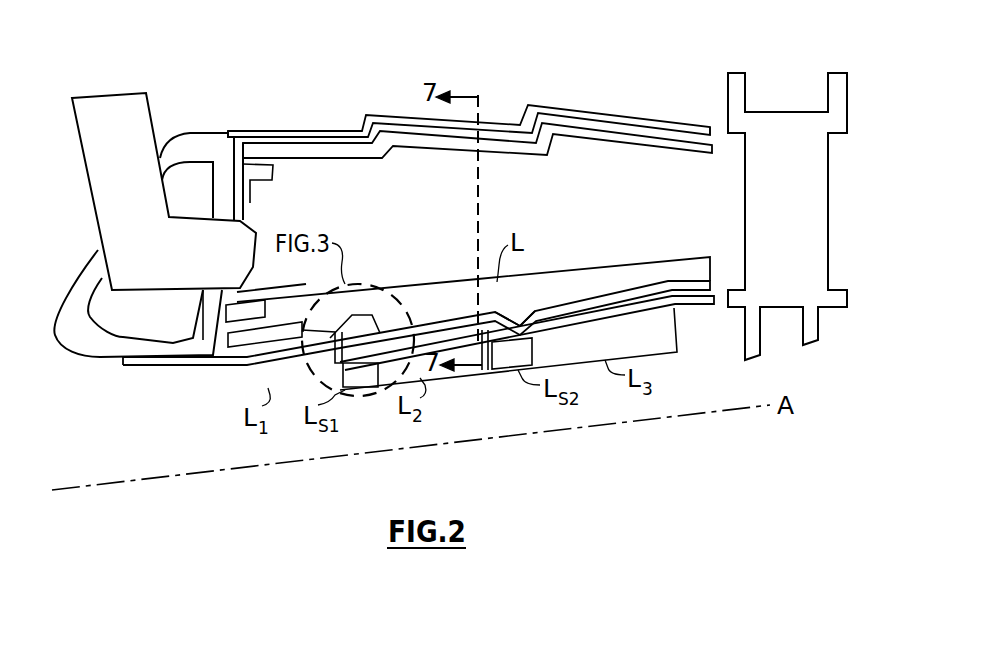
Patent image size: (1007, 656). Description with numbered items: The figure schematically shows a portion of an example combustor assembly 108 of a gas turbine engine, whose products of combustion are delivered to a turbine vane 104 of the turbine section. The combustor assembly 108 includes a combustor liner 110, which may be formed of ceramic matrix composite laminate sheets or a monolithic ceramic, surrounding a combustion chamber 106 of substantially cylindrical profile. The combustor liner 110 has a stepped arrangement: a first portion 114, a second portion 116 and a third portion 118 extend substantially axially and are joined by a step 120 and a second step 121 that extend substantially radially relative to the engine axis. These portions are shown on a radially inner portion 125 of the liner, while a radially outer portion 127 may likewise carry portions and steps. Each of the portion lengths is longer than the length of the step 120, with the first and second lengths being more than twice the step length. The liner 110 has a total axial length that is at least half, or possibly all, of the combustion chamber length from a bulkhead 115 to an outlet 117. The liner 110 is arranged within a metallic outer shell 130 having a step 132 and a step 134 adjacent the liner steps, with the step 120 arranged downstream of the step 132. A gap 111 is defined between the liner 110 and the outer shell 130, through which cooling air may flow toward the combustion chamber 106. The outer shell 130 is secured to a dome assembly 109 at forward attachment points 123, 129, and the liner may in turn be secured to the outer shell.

The turbine vane 104 is at (802, 153).
The combustion chamber 106 is at (598, 167).
The combustor assembly 108 is at (470, 87).
The dome assembly 109 is at (195, 147).
The combustor liner 110 is at (690, 277).
The gap 111 is at (620, 305).
The first portion 114 is at (260, 300).
The bulkhead 115 is at (250, 203).
The second portion 116 is at (463, 290).
The outlet 117 is at (705, 182).
The third portion 118 is at (603, 293).
The step 120 is at (363, 312).
The second step 121 is at (515, 310).
The forward attachment point 123 is at (125, 362).
The radially inner portion 125 is at (555, 318).
The radially outer portion 127 is at (548, 135).
The forward attachment point 129 is at (240, 133).
The outer shell 130 is at (247, 360).
The step 132 is at (330, 340).
The step 134 is at (492, 353).